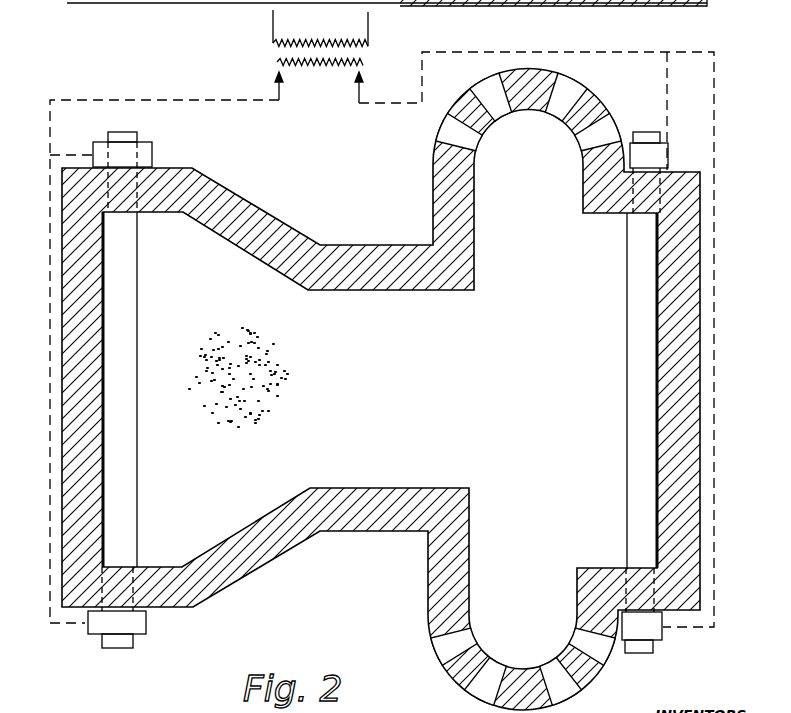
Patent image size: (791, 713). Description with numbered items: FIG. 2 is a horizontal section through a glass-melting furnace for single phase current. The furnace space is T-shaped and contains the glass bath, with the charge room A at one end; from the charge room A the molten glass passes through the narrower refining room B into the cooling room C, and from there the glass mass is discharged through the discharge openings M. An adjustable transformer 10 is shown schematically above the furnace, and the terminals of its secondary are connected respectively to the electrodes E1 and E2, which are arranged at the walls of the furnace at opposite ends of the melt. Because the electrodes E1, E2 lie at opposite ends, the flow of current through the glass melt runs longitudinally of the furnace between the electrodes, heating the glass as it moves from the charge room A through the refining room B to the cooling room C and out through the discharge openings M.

The adjustable transformer 10 is at (272, 55).
The electrode E1 is at (119, 305).
The electrode E2 is at (639, 297).
The charge room A is at (238, 377).
The refining room B is at (370, 378).
The cooling room C is at (381, 390).
The discharge openings M is at (485, 88).